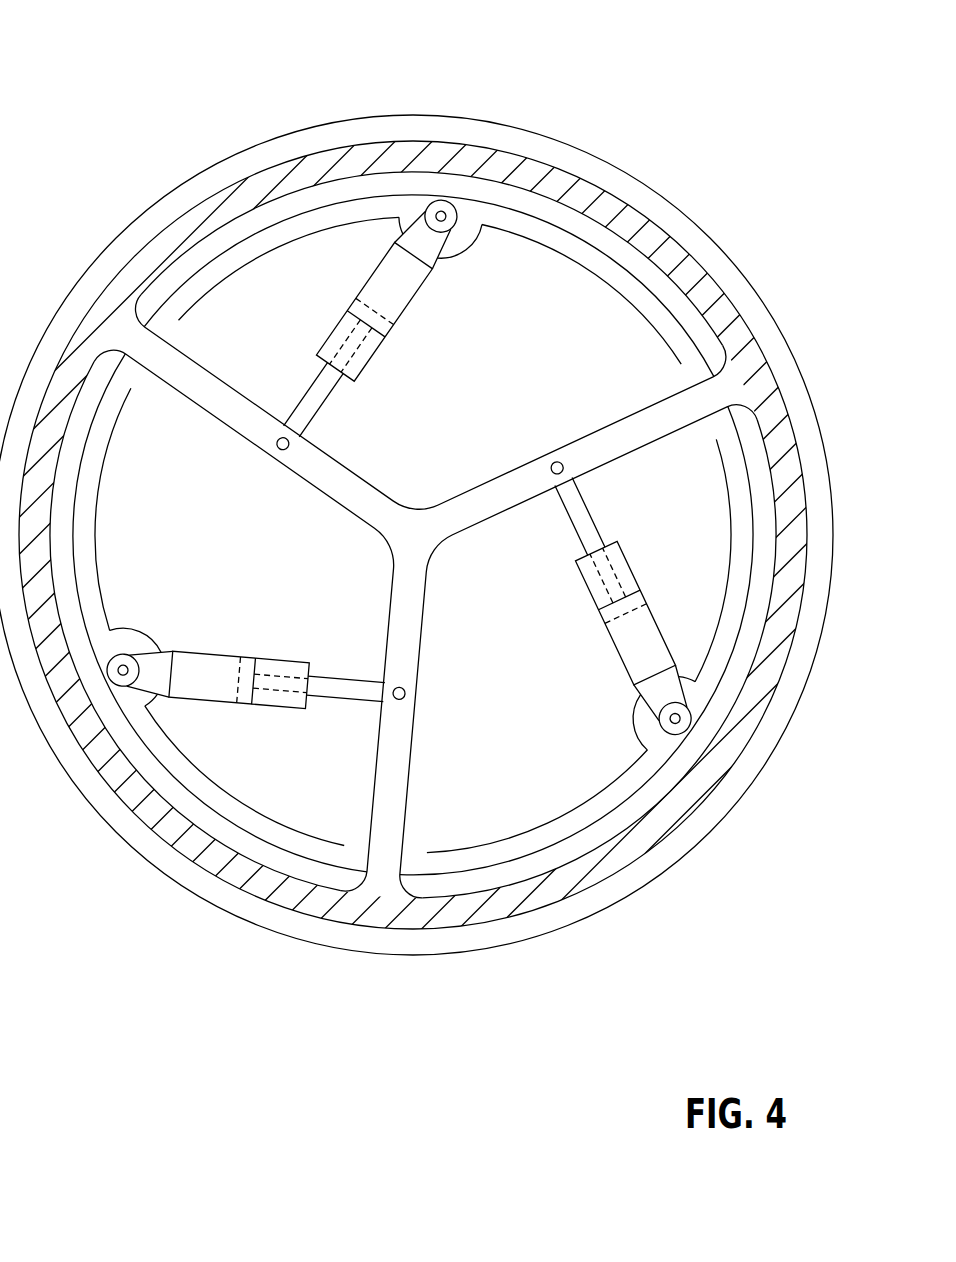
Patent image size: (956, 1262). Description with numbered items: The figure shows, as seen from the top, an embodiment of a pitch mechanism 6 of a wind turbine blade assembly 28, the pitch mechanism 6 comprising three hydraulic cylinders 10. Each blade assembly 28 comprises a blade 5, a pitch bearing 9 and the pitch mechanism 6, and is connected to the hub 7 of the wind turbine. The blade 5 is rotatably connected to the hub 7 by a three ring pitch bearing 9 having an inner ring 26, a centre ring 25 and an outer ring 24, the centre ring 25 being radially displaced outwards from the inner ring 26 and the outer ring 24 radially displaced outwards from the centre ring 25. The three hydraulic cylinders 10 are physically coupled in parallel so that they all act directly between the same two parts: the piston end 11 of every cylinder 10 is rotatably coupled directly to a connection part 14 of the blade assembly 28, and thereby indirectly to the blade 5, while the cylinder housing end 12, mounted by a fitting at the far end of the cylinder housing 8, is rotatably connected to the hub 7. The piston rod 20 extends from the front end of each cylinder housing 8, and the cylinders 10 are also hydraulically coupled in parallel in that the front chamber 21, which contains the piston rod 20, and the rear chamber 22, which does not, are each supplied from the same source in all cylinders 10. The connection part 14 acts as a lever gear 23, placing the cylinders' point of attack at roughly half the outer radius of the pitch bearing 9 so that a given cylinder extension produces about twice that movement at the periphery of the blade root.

The blade 5 is at (478, 631).
The centre ring 25 is at (478, 631).
The pitch mechanism 6 is at (416, 479).
The blade assembly 28 is at (416, 479).
The outer ring 24 is at (680, 230).
The hub 7 is at (593, 258).
The inner ring 26 is at (640, 268).
The cylinder housing 8 is at (273, 673).
The hydraulic cylinder 10 is at (273, 712).
The piston end 11 is at (410, 692).
The cylinder housing end 12 is at (122, 686).
The connection part 14 is at (425, 596).
The lever gear 23 is at (393, 770).
The piston rod 20 is at (345, 688).
The front chamber 21 is at (280, 663).
The rear chamber 22 is at (205, 672).
The pitch bearing 9 is at (478, 631).